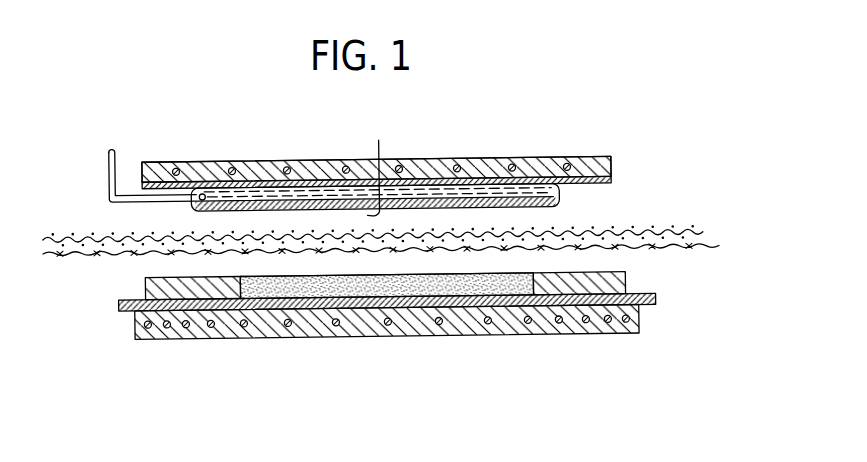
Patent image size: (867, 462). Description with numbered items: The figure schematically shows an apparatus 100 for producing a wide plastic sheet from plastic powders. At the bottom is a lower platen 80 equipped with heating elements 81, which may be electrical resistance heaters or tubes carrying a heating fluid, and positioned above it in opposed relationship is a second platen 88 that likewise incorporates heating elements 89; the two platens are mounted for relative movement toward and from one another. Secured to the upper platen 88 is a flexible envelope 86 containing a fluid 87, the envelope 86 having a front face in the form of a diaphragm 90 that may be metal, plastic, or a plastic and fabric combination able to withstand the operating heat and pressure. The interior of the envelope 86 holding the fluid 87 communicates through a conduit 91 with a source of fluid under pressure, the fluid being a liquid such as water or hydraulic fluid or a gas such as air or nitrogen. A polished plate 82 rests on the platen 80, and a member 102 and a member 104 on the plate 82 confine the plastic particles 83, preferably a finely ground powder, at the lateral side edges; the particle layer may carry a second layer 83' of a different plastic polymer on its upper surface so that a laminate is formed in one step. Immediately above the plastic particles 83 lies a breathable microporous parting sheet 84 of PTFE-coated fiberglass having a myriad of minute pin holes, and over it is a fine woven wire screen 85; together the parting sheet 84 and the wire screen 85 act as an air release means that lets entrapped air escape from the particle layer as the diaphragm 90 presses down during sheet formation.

The apparatus 100 is at (692, 165).
The second platen 88 is at (605, 159).
The heating elements 89 is at (235, 167).
The diaphragm 90 is at (380, 167).
The flexible envelope 86 is at (570, 194).
The fluid 87 is at (532, 201).
The conduit 91 is at (110, 169).
The wire screen 85 is at (678, 233).
The microporous parting sheet 84 is at (716, 251).
The member 102 is at (153, 289).
The plastic particles 83 is at (387, 323).
The second layer 83' is at (357, 267).
The member 104 is at (625, 283).
The polished plate 82 is at (656, 303).
The lower platen 80 is at (307, 328).
The heating elements 81 is at (243, 329).